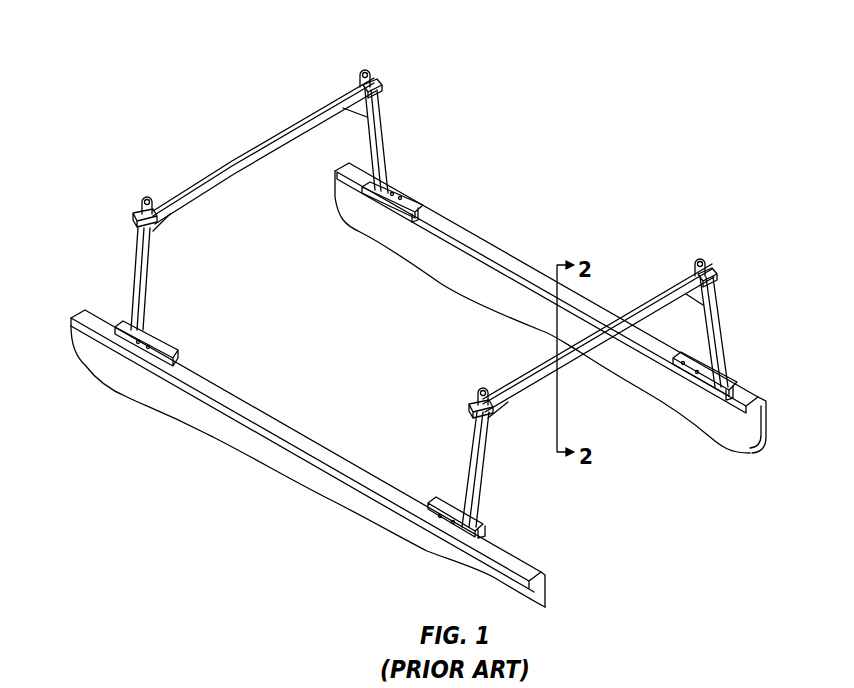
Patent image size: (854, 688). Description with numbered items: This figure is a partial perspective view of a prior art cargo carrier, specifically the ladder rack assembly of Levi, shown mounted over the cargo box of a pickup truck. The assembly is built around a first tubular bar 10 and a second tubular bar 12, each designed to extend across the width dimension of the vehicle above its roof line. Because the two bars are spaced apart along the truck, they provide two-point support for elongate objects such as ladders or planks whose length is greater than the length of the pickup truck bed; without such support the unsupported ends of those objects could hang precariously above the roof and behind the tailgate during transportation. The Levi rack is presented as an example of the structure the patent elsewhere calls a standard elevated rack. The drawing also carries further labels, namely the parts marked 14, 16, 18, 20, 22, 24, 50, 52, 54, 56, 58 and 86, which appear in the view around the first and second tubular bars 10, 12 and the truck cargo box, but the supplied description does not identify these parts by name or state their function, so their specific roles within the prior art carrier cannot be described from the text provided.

The first tubular bar 10 is at (262, 187).
The second tubular bar 12 is at (633, 377).
The mounting clamp bracket 14 is at (412, 213).
The far truck bed side rail 16 is at (494, 252).
The near truck bed side rail 18 is at (263, 417).
The truck bed side wall 20 is at (263, 452).
The crossbar of first rack 22 is at (253, 152).
The crossbar of second rack 24 is at (535, 373).
The upright post 50 is at (378, 143).
The upright post 52 is at (140, 270).
The upright post 54 is at (716, 328).
The upright post 56 is at (486, 471).
The tie-down eye bracket 58 is at (377, 77).
The mounting foot plate 86 is at (118, 348).